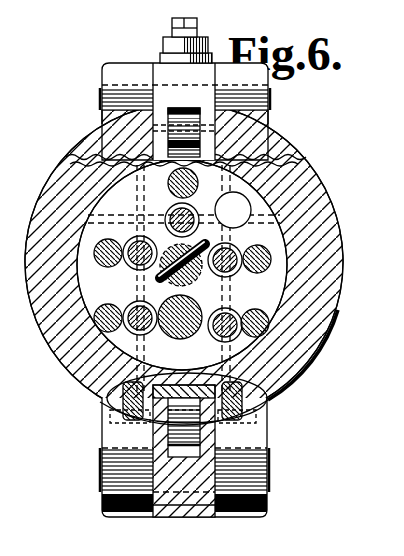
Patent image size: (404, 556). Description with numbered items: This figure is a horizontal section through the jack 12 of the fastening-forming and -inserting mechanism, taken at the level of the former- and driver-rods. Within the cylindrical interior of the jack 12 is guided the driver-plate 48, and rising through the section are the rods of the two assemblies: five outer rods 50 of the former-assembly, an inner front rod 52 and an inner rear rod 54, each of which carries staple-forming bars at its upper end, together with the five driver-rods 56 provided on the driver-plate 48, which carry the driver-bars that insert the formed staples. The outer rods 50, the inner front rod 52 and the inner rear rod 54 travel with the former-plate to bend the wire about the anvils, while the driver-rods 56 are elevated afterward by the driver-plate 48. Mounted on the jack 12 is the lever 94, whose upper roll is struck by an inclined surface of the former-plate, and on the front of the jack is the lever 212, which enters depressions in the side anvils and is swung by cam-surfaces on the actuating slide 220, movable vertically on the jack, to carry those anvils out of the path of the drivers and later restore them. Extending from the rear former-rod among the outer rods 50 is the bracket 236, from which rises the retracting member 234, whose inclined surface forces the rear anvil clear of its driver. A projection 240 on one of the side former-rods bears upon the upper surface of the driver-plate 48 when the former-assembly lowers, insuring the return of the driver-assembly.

The jack 12 is at (324, 198).
The driver-plate 48 is at (283, 252).
The outer rods 50 is at (167, 189).
The inner front rod 52 is at (196, 337).
The inner rear rod 54 is at (210, 279).
The driver-rods 56 is at (178, 208).
The lever 94 is at (165, 78).
The lever 212 is at (187, 507).
The actuating slide 220 is at (262, 392).
The retracting member 234 is at (264, 158).
The bracket 236 is at (262, 184).
The projection 240 is at (212, 243).